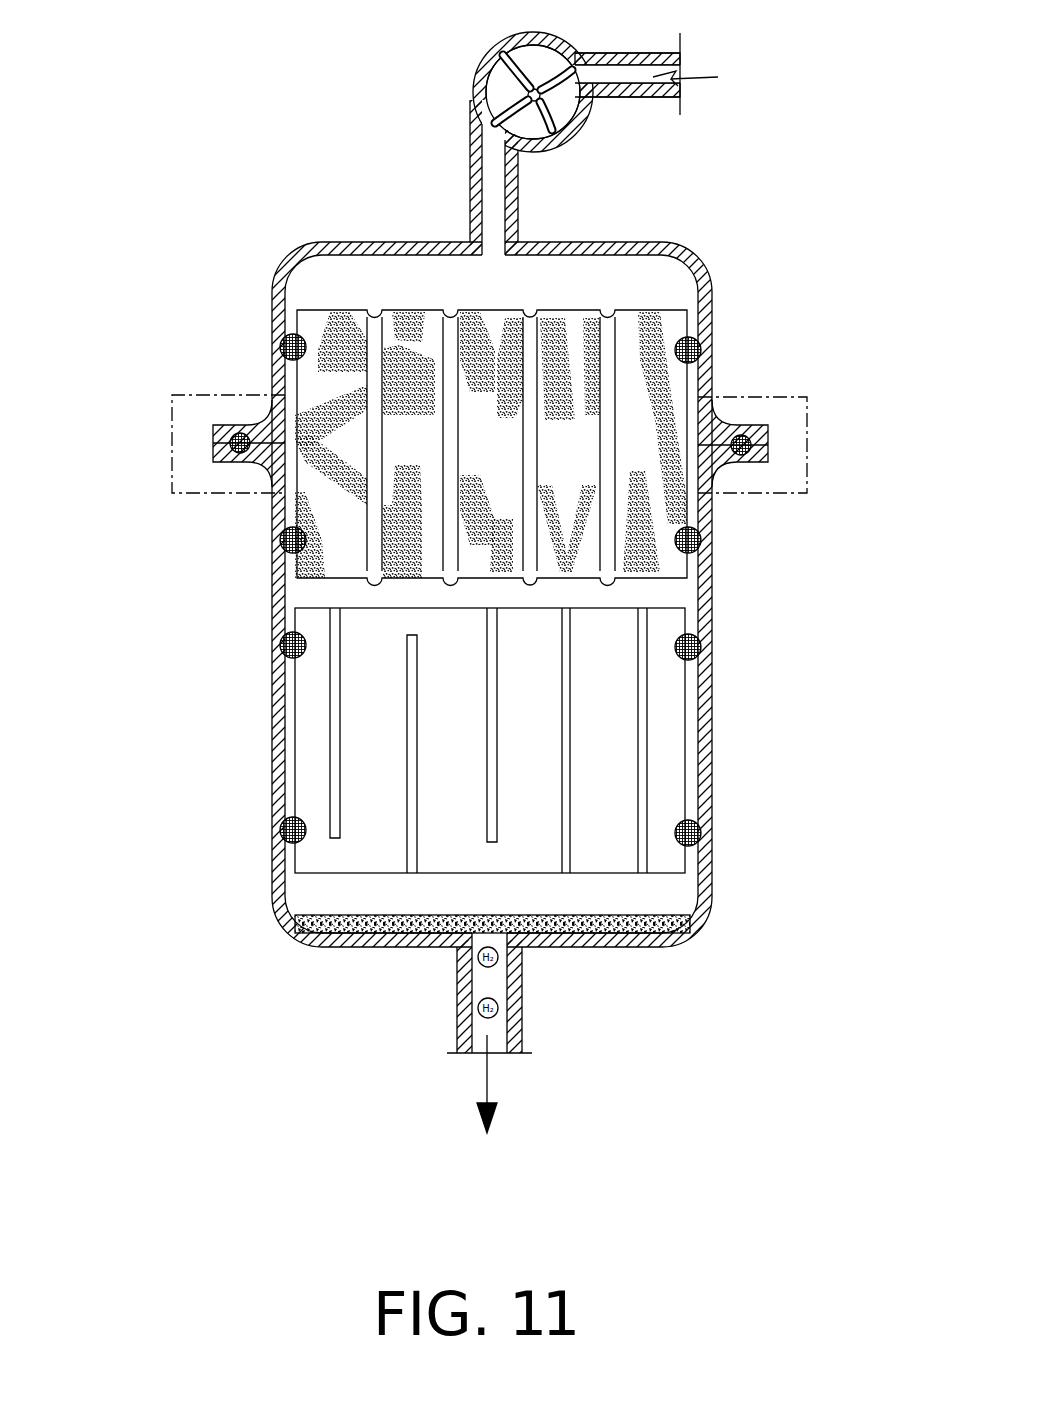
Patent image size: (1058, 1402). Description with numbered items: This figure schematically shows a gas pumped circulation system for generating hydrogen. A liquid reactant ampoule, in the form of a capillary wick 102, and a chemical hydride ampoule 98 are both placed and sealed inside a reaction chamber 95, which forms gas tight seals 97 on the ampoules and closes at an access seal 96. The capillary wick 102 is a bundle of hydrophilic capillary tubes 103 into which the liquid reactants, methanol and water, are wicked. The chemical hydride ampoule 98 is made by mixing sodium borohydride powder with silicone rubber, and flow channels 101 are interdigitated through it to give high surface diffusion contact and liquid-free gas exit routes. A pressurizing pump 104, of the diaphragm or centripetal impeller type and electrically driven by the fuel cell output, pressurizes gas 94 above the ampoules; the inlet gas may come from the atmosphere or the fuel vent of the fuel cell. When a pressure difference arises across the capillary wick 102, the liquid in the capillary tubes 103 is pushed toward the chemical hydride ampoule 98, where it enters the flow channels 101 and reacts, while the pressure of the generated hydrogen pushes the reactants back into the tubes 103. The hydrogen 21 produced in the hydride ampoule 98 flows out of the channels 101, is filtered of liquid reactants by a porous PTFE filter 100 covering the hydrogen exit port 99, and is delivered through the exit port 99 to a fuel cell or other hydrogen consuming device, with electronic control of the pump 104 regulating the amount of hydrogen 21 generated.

The hydrogen 21 is at (470, 1152).
The pressurizing gas 94 is at (718, 77).
The reaction chamber 95 is at (713, 307).
The access seal 96 is at (763, 494).
The gas tight seals 97 is at (703, 660).
The chemical hydride ampoule 98 is at (625, 862).
The hydrogen exit port 99 is at (505, 1058).
The filter 100 is at (387, 927).
The flow channels 101 is at (405, 748).
The capillary wick 102 is at (333, 502).
The capillary tubes 103 is at (600, 318).
The pressurizing pump 104 is at (512, 85).